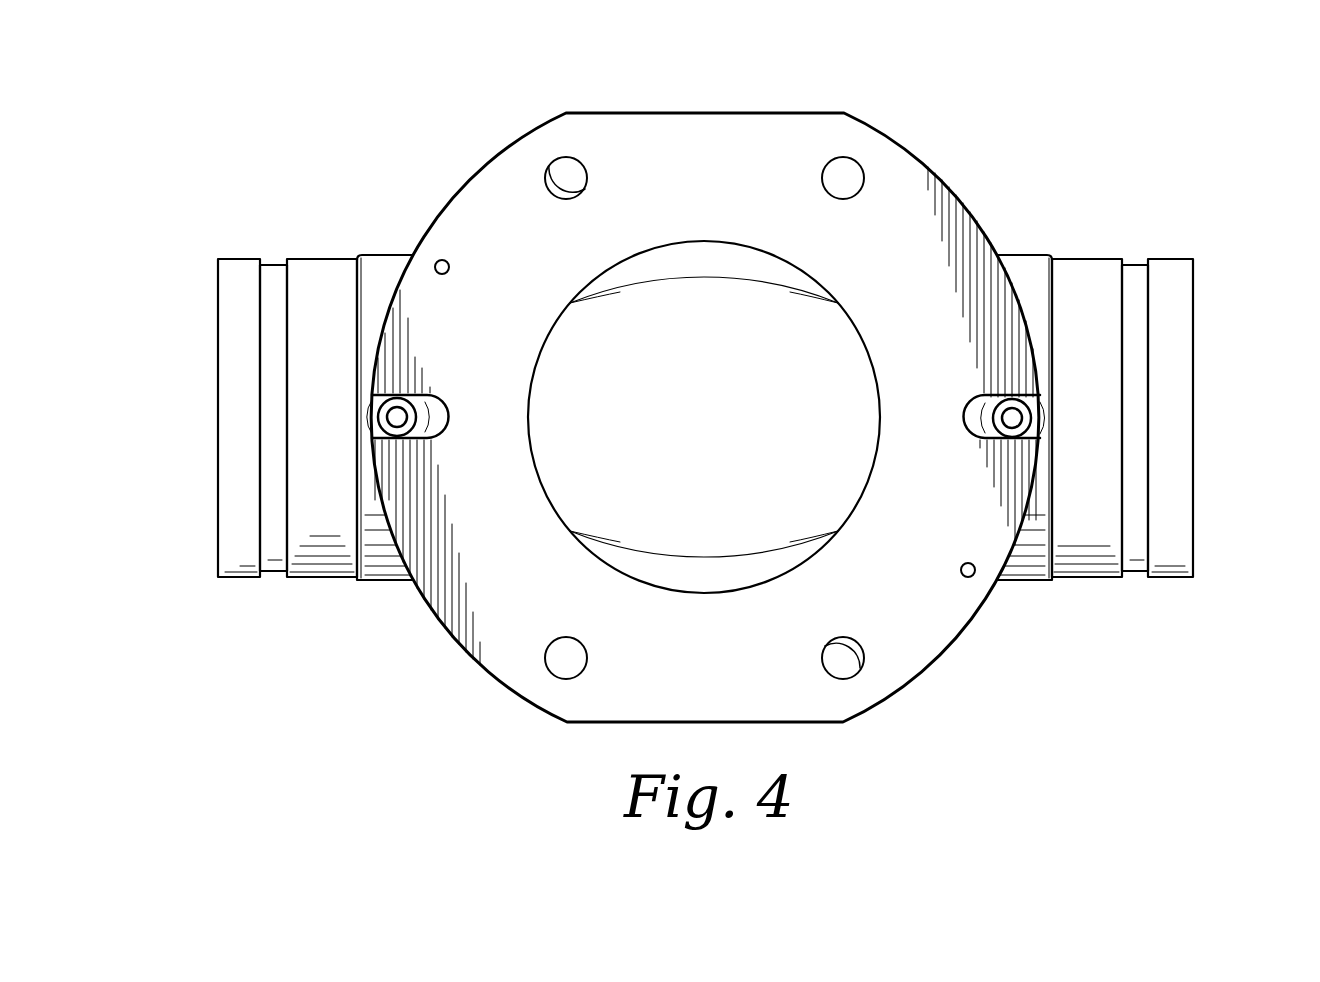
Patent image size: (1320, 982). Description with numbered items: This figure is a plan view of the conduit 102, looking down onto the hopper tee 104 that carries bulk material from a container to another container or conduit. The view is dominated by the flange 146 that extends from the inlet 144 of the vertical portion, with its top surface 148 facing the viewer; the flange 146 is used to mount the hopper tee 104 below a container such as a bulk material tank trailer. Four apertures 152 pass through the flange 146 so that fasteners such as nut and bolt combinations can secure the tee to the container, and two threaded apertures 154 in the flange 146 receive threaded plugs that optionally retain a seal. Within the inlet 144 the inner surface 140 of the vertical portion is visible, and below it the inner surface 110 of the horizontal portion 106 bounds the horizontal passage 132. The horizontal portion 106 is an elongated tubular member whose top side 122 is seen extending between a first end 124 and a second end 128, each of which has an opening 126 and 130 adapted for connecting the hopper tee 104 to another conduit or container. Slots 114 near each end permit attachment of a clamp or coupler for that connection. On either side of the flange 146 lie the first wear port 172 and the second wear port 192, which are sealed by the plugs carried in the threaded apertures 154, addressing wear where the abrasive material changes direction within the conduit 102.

The conduit 102 is at (1152, 645).
The hopper tee 104 is at (840, 112).
The horizontal portion 106 is at (1028, 186).
The inner surface 110 is at (716, 450).
The slots 114 is at (272, 572).
The top side 122 is at (312, 408).
The first end 124 is at (225, 258).
The opening 126 is at (216, 478).
The second end 128 is at (1186, 258).
The opening 130 is at (1195, 490).
The horizontal passage 132 is at (577, 352).
The inner surface 140 is at (722, 260).
The inlet 144 is at (735, 592).
The flange 146 is at (932, 655).
The top surface 148 is at (696, 691).
The apertures 152 is at (585, 187).
The threaded apertures 154 is at (443, 275).
The first wear port 172 is at (385, 416).
The second wear port 192 is at (1026, 418).